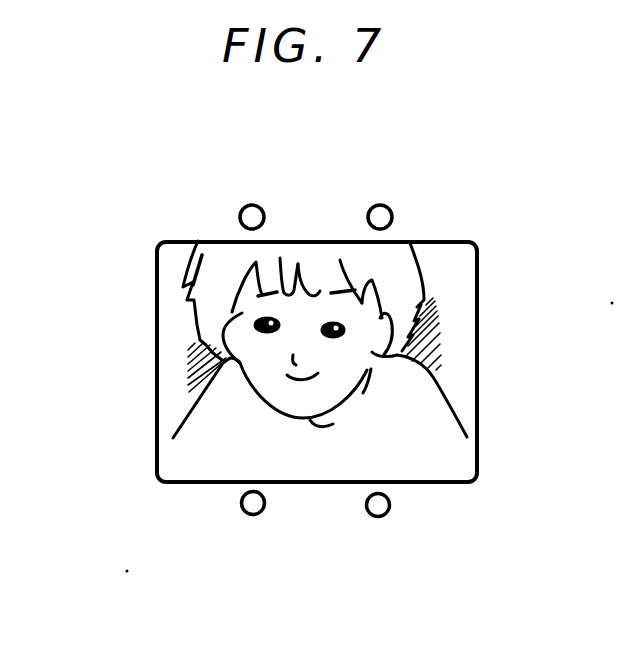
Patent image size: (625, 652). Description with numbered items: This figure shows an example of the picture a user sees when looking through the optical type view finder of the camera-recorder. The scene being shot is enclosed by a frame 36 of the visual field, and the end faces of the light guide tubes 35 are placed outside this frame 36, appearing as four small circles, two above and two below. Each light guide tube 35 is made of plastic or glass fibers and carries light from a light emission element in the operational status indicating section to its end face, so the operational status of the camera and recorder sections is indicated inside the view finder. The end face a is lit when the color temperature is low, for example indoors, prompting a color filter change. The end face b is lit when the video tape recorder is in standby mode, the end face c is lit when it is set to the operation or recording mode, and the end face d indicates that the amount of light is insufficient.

The light guide tubes 35 is at (315, 356).
The frame of a visual field 36 is at (158, 371).
The end face a of the light guide tube a is at (240, 210).
The end face b is at (392, 212).
The end face c is at (241, 504).
The end face d is at (409, 521).